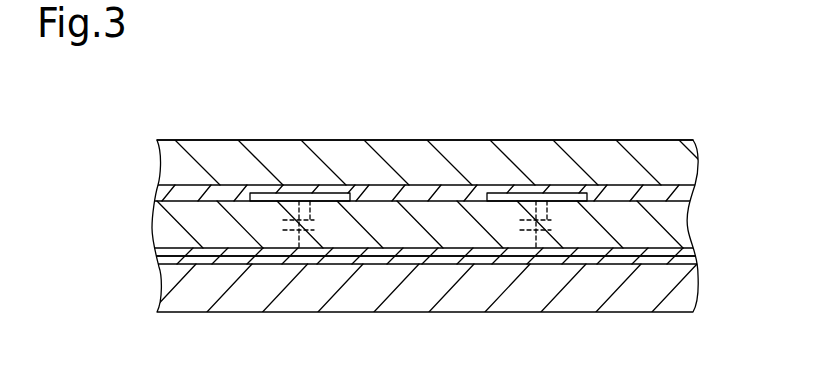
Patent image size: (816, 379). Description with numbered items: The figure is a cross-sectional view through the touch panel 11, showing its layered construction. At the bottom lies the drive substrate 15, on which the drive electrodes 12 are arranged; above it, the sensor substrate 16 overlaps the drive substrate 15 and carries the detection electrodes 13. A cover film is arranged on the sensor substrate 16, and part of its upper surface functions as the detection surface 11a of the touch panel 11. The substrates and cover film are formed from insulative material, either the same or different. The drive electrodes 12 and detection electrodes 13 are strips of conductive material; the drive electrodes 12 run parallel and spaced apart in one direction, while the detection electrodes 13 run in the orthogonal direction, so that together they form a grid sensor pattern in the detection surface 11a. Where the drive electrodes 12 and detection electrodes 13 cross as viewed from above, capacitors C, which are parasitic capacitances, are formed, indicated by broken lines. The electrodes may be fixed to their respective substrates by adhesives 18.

The touch panel 11 is at (685, 95).
The detection surface 11a is at (672, 140).
The drive electrode 12 is at (397, 257).
The detection electrode 13 is at (294, 197).
The drive substrate 15 is at (165, 277).
The sensor substrate 16 is at (157, 228).
The adhesive 18 is at (688, 191).
The capacitor C is at (317, 193).